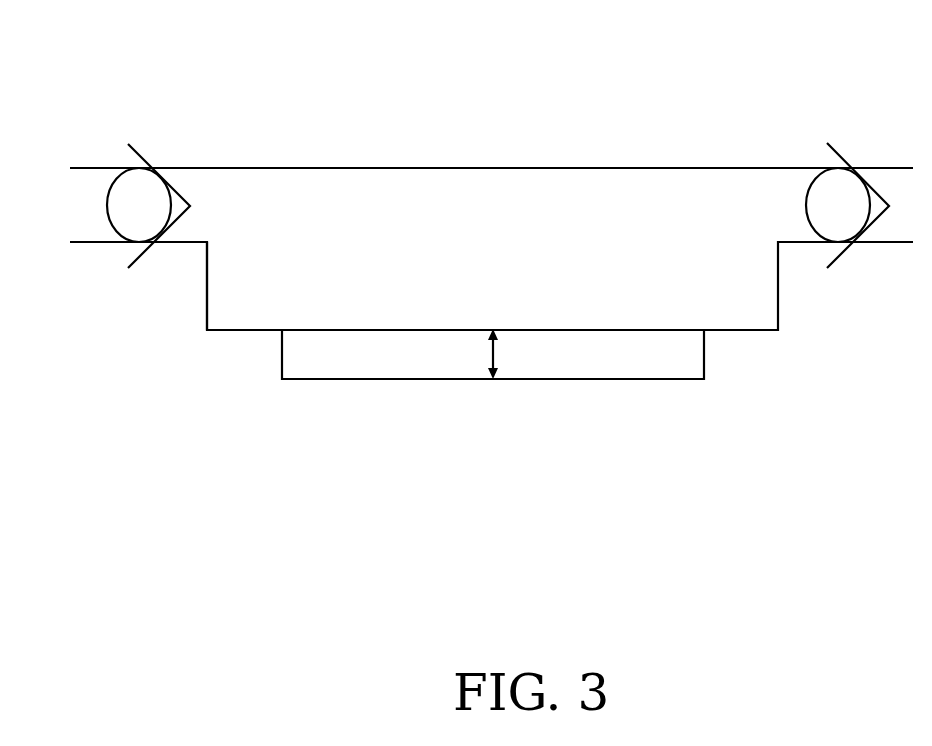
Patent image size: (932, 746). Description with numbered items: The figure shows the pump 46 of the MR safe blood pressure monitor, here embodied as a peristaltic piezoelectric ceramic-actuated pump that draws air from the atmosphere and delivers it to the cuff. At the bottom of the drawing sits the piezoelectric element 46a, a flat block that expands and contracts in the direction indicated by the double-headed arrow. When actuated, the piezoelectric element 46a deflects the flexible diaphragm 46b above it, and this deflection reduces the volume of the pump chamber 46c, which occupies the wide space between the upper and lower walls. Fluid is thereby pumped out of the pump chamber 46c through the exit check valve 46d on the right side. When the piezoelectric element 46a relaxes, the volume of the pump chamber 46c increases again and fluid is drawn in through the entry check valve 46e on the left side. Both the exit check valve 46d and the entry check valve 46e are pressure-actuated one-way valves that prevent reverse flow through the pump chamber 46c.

The pump 46 is at (155, 412).
The piezoelectric element 46a is at (552, 380).
The flexible diaphragm 46b is at (263, 328).
The pump chamber 46c is at (597, 215).
The exit check valve 46d is at (838, 150).
The entry check valve 46e is at (133, 150).